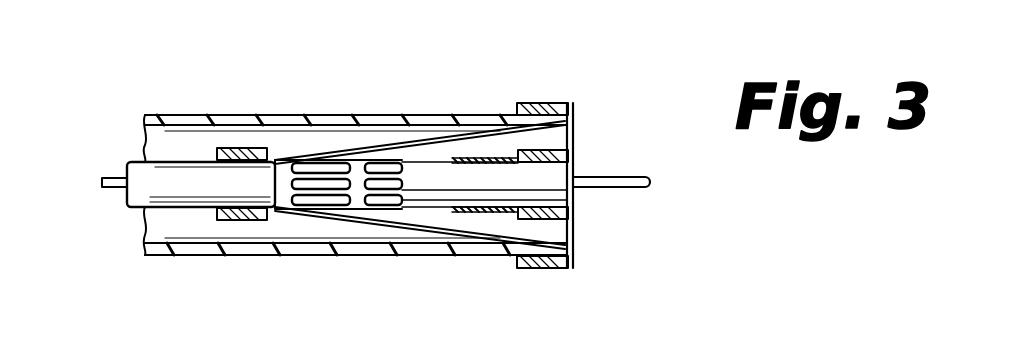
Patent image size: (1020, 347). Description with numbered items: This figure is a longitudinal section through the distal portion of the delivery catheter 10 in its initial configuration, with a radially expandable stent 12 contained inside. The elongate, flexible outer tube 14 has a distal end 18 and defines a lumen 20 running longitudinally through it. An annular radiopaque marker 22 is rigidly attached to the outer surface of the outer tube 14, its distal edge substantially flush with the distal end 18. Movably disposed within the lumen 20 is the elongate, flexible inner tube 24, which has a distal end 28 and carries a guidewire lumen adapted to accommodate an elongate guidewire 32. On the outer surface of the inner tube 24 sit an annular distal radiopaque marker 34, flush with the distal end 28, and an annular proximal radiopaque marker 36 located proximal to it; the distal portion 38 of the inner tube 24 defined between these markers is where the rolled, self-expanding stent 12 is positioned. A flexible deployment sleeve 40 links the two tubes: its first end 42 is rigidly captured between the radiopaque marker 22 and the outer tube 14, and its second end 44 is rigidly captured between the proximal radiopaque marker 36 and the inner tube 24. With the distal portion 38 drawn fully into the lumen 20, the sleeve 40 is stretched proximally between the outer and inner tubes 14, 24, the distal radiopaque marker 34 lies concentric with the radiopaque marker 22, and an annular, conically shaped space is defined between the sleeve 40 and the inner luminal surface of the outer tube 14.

The delivery catheter 10 is at (512, 63).
The stent 12 is at (397, 156).
The outer tube 14 is at (460, 113).
The distal end 18 is at (579, 114).
The lumen 20 is at (178, 224).
The radiopaque marker 22 is at (542, 102).
The inner tube 24 is at (190, 153).
The distal end 28 is at (581, 159).
The guidewire 32 is at (625, 177).
The distal radiopaque marker 34 is at (572, 212).
The proximal radiopaque marker 36 is at (252, 221).
The distal portion 38 is at (448, 188).
The deployment sleeve 40 is at (372, 235).
The first end 42 is at (512, 263).
The second end 44 is at (234, 146).